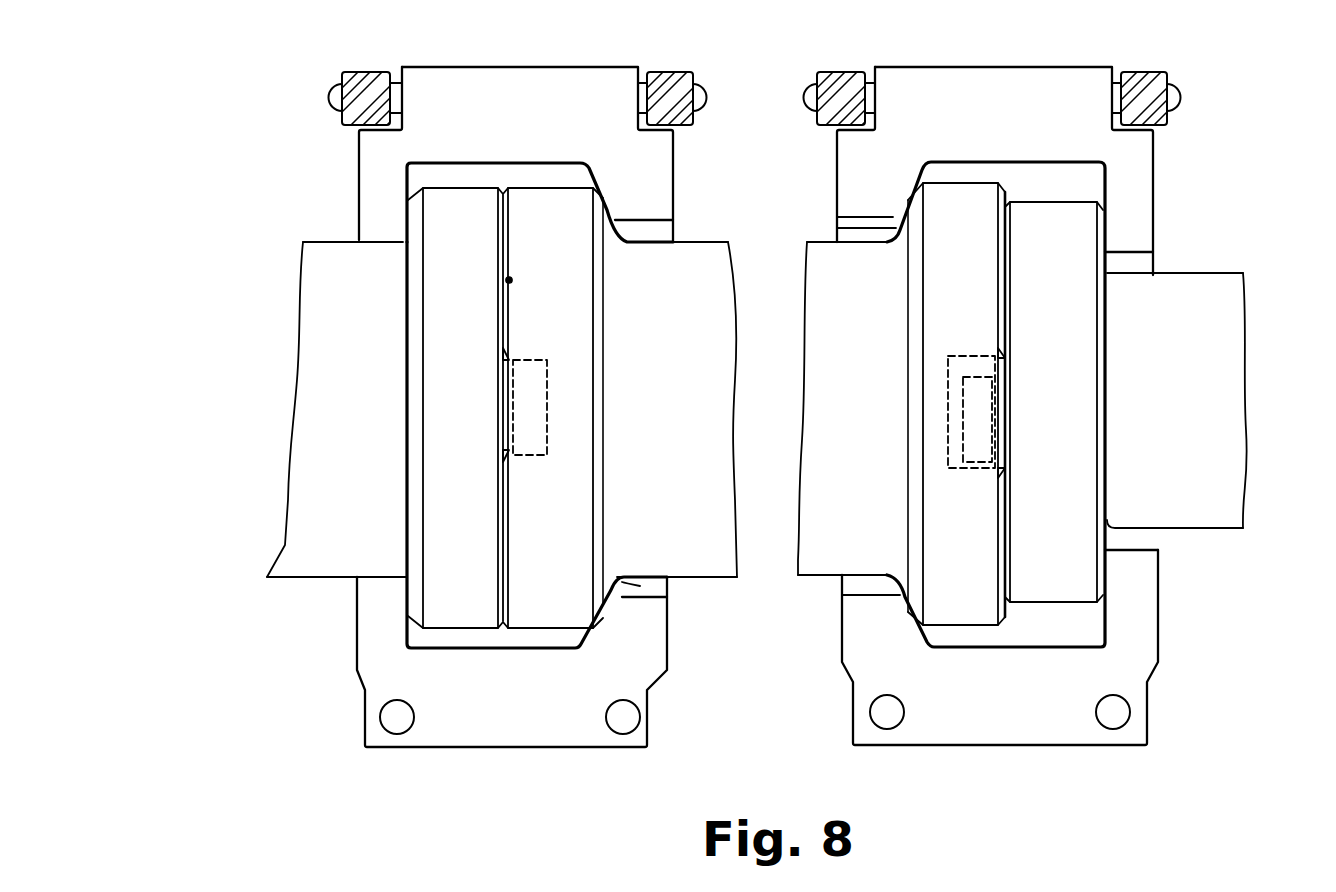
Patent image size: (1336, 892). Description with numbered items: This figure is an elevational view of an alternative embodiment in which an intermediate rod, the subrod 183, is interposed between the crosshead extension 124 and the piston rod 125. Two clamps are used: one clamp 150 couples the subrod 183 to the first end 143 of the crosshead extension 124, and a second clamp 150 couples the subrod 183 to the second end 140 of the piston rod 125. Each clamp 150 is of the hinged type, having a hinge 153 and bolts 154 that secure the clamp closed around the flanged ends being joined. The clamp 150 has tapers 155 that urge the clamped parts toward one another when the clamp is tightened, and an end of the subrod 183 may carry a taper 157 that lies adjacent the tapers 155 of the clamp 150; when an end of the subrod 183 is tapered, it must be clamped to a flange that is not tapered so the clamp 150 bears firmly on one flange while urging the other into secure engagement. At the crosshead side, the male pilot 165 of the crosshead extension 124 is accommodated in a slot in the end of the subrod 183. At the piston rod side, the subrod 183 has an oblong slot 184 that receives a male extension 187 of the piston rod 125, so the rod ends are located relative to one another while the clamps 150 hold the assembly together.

The clamp 150 is at (463, 78).
The hinge 153 is at (348, 95).
The taper 155 is at (592, 173).
The male pilot 165 is at (528, 427).
The first end 143 is at (507, 281).
The crosshead extension 124 is at (323, 288).
The subrod 183 is at (690, 260).
The taper 157 is at (622, 582).
The bolt 154 is at (395, 720).
The second end 140 is at (1000, 262).
The oblong slot 184 is at (973, 370).
The male extension 187 is at (980, 447).
The piston rod 125 is at (1218, 350).